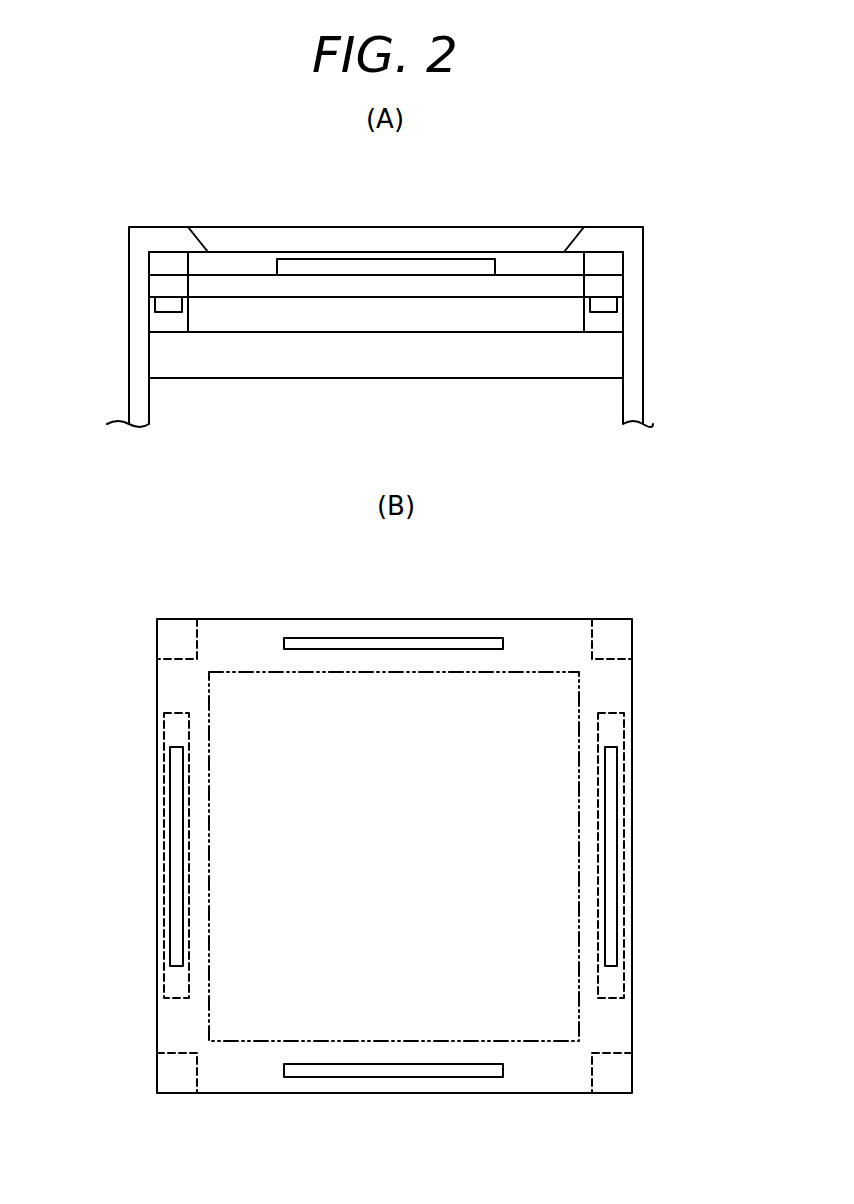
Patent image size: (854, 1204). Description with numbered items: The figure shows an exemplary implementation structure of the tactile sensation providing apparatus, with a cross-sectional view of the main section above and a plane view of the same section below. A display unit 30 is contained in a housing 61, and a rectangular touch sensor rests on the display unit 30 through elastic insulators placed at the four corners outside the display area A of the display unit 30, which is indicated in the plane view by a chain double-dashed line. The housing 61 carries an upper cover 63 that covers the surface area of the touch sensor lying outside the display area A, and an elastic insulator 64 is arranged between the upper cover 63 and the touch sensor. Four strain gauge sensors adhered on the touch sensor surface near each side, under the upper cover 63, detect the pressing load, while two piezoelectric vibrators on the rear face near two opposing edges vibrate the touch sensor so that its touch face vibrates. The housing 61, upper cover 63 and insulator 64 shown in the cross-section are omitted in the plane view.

The display unit 30 is at (180, 355).
The housing 61 is at (632, 362).
The upper cover 63 is at (595, 243).
The insulator 64 is at (613, 262).
The display area A is at (209, 693).